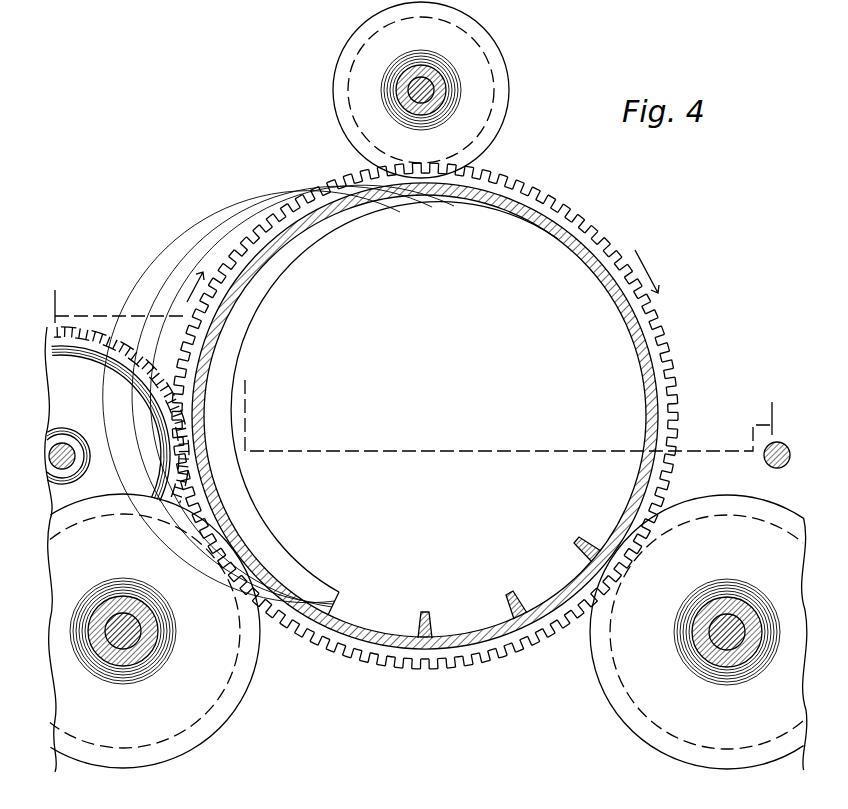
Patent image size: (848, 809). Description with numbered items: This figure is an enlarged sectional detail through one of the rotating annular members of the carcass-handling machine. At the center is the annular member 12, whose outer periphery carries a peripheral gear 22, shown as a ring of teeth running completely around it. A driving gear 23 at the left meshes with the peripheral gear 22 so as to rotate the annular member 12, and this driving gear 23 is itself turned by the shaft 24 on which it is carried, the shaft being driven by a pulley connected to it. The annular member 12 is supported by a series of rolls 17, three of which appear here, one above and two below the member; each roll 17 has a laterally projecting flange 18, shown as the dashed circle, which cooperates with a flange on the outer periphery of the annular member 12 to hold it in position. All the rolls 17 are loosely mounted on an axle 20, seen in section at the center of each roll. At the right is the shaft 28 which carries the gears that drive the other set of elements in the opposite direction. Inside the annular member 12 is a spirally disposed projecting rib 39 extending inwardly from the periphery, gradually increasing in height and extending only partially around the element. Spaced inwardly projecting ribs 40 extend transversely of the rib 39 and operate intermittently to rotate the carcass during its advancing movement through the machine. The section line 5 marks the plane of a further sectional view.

The section line 5- 5 is at (417, 370).
The annular member 12 is at (598, 271).
The rolls 17 is at (350, 131).
The laterally projecting flange 18 is at (495, 118).
The axle 20 is at (421, 80).
The peripheral gear 22 is at (225, 262).
The driving gear 23 is at (130, 352).
The shaft 24 is at (72, 464).
The shaft 28 is at (767, 462).
The spirally disposed projecting ribs 39 is at (223, 409).
The inwardly projecting ribs 40 is at (578, 542).